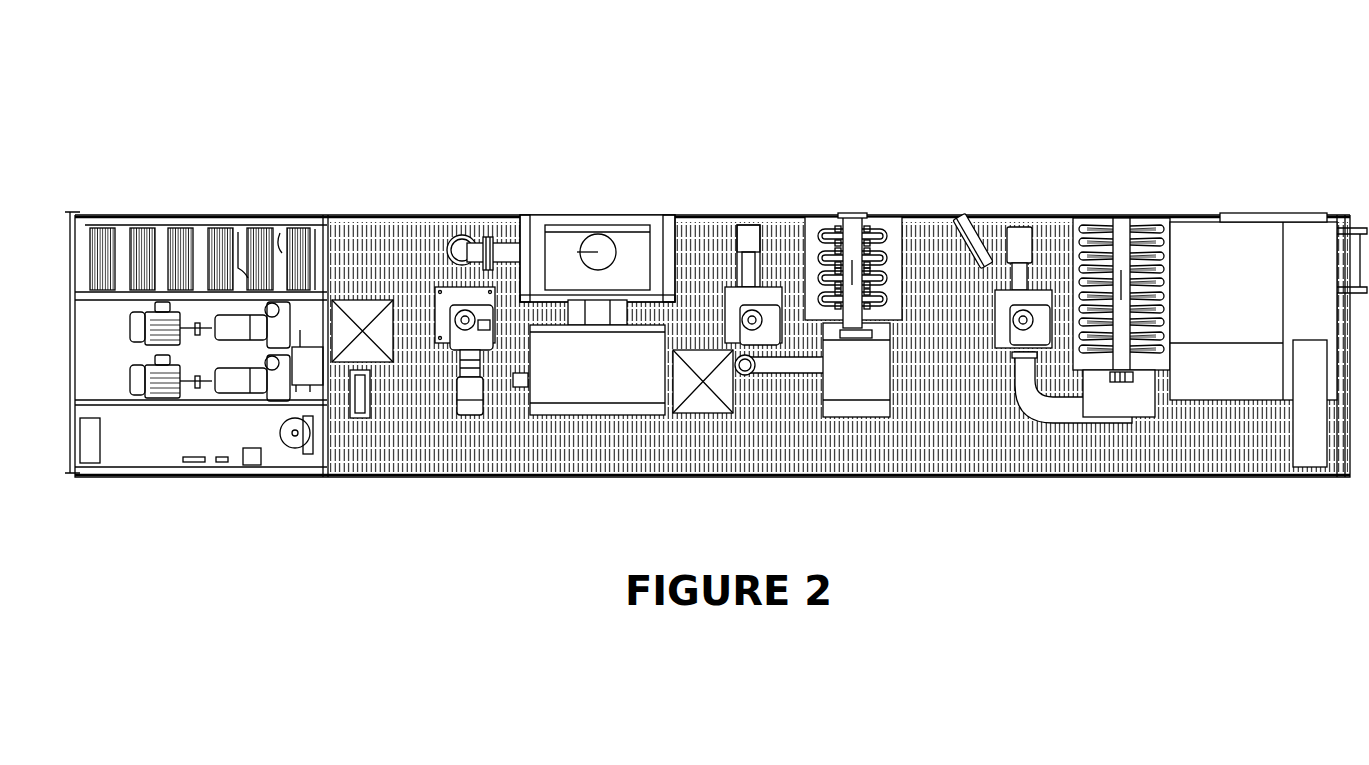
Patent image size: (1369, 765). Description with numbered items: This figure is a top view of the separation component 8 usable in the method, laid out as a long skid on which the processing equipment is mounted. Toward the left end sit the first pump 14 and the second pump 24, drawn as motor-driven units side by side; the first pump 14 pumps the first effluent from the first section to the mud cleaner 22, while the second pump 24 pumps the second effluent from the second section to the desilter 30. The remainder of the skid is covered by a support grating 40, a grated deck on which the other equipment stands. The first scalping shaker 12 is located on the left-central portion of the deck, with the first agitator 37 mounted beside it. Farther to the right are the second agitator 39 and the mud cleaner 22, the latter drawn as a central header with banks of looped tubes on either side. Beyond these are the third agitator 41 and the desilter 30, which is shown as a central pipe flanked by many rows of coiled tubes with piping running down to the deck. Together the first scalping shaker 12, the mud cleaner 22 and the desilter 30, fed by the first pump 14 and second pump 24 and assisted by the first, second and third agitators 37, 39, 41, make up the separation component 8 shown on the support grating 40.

The separation component 8 is at (106, 146).
The first scalping shaker 12 is at (627, 388).
The first pump 14 is at (132, 330).
The mud cleaner 22 is at (853, 240).
The second pump 24 is at (132, 383).
The desilter 30 is at (1120, 240).
The first agitator 37 is at (462, 312).
The second agitator 39 is at (750, 318).
The support grating 40 is at (768, 445).
The third agitator 41 is at (1025, 316).